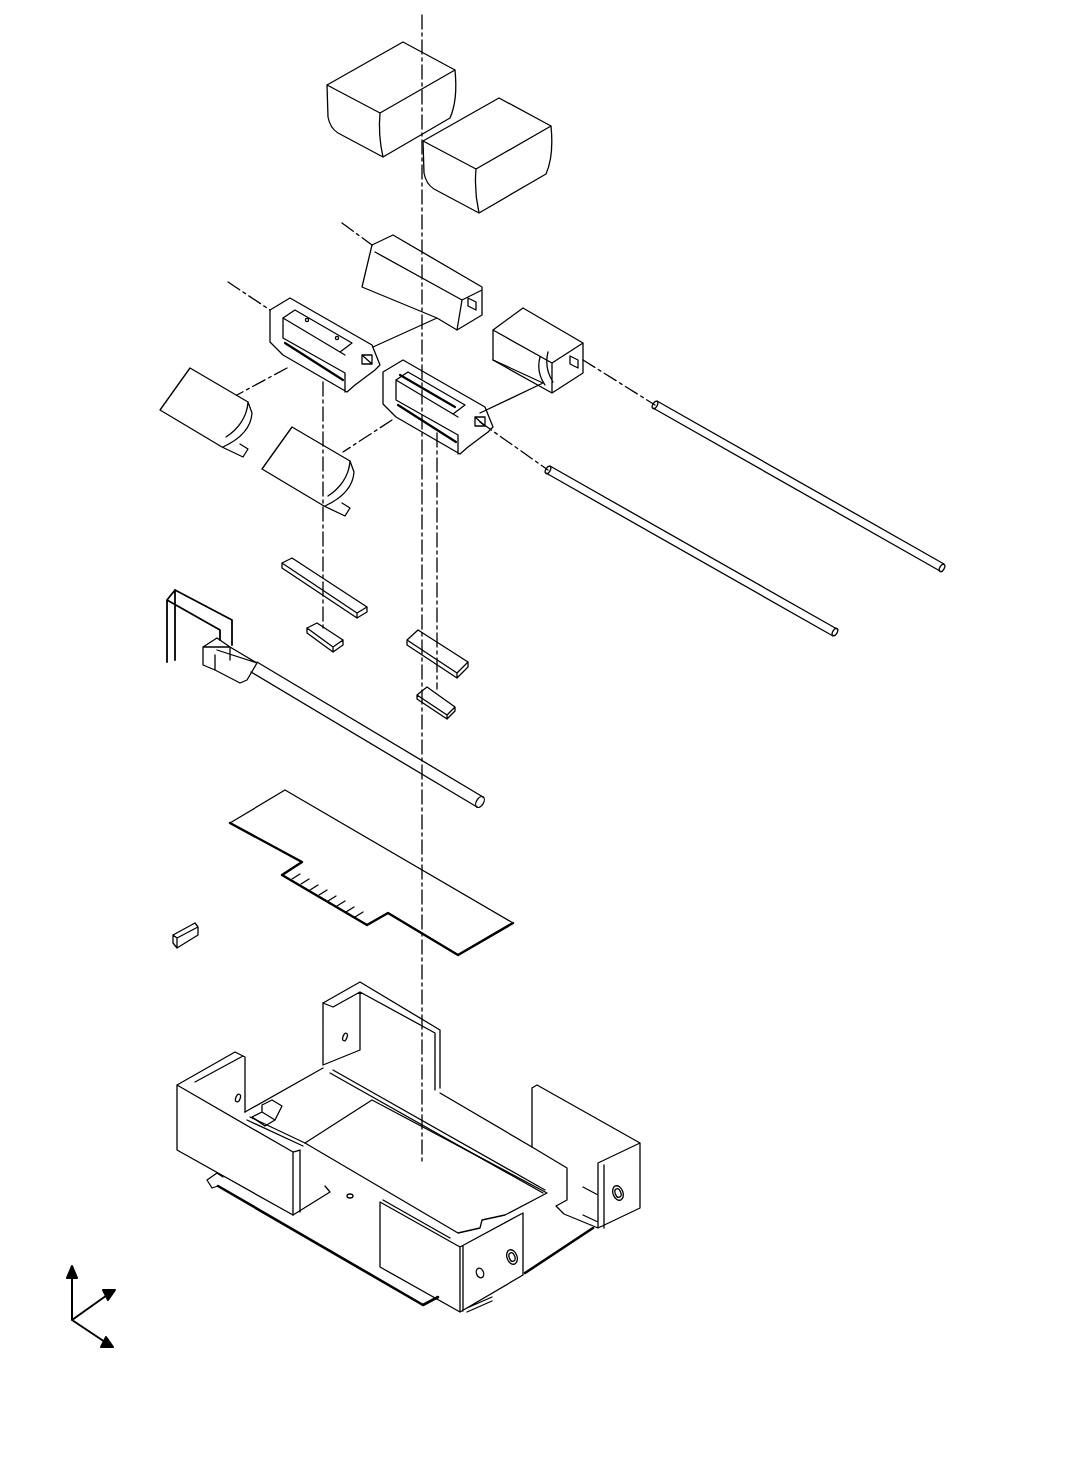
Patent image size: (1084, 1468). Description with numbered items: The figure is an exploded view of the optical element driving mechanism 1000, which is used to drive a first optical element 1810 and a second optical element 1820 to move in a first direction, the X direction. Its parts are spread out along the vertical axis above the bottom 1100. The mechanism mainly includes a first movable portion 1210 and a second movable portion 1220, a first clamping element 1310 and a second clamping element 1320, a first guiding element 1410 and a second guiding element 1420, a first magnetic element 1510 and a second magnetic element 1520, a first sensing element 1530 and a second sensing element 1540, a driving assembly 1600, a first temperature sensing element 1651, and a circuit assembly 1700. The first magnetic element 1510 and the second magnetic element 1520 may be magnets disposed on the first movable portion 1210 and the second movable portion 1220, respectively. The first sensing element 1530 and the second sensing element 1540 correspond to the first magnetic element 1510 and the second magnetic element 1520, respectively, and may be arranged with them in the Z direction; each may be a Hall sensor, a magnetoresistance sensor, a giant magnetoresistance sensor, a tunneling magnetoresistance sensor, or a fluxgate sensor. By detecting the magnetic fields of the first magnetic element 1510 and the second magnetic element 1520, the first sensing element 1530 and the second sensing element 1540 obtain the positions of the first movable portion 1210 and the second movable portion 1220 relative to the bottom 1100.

The optical element driving mechanism 1000 is at (138, 52).
The bottom 1100 is at (308, 1100).
The first movable portion 1210 is at (540, 330).
The second movable portion 1220 is at (288, 307).
The first clamping element 1310 is at (295, 475).
The second clamping element 1320 is at (197, 418).
The first guiding element 1410 is at (783, 480).
The second guiding element 1420 is at (745, 583).
The first magnetic element 1510 is at (452, 657).
The second magnetic element 1520 is at (297, 567).
The first sensing element 1530 is at (450, 697).
The second sensing element 1540 is at (315, 627).
The driving assembly 1600 is at (275, 688).
The first temperature sensing element 1651 is at (173, 940).
The circuit assembly 1700 is at (277, 835).
The first optical element 1810 is at (517, 118).
The second optical element 1820 is at (368, 78).